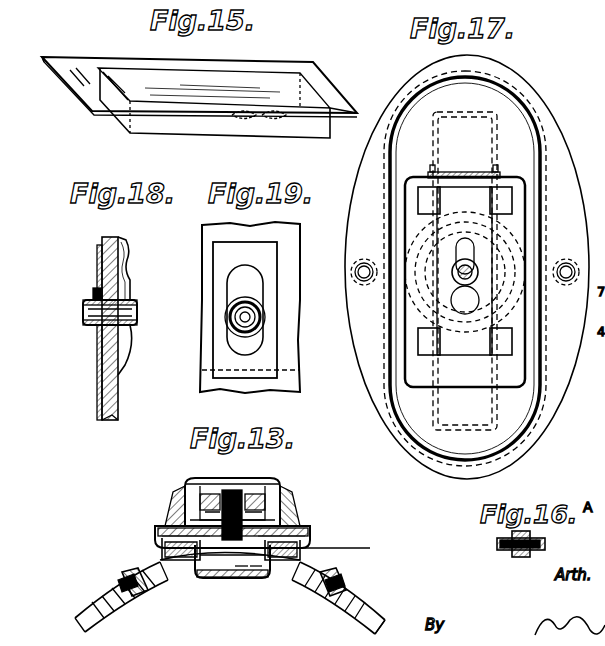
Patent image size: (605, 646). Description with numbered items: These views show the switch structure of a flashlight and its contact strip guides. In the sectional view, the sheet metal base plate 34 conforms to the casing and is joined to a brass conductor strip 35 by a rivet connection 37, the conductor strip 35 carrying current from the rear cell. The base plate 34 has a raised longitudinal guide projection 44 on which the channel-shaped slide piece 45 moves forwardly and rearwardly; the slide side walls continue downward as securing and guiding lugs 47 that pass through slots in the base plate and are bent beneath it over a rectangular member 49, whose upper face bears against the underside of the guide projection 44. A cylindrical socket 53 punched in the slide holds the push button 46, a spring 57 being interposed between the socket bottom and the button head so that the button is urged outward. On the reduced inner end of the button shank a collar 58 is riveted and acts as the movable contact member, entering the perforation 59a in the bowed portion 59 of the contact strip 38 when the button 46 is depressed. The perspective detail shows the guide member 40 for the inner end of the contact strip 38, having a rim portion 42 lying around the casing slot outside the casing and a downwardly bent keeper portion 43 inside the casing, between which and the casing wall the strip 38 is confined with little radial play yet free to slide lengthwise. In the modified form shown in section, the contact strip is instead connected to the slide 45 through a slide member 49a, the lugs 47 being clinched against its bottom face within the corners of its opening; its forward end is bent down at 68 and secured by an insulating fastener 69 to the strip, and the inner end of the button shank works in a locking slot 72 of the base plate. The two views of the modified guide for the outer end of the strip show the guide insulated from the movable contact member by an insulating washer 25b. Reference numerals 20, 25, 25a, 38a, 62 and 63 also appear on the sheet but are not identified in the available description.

In FIG. 19, the sheet metal plate 20 is at (203, 358).
In FIG. 13, the sheet metal plate 20 is at (370, 612).
In FIG. 18, the bushing 25 is at (128, 262).
In FIG. 18, the bushing collar 25a is at (138, 313).
In FIG. 18, the insulating washer 25b is at (96, 290).
In FIG. 19, the insulating washer 25b is at (258, 312).
In FIG. 13, the base plate 34 is at (348, 583).
In FIG. 13, the conductor strip 35 is at (128, 598).
In FIG. 13, the rivet connection 37 is at (125, 565).
In FIG. 18, the contact strip 38 is at (100, 376).
In FIG. 19, the contact strip 38 is at (268, 352).
In FIG. 17, the contact strip 38 is at (474, 267).
In FIG. 13, the contact strip 38 is at (196, 580).
In FIG. 19, the slot in plate 38a is at (250, 277).
In FIG. 15, the guide member 40 is at (199, 79).
In FIG. 17, the guide member 40 is at (465, 268).
In FIG. 13, the guide member 40 is at (320, 553).
In FIG. 15, the rim portion 42 is at (70, 62).
In FIG. 15, the keeper portion 43 is at (190, 133).
In FIG. 17, the keeper portion 43 is at (465, 271).
In FIG. 13, the keeper portion 43 is at (215, 582).
In FIG. 17, the guide projection 44 is at (465, 282).
In FIG. 13, the guide projection 44 is at (305, 538).
In FIG. 13, the slide piece 45 is at (210, 478).
In FIG. 13, the push button 46 is at (262, 480).
In FIG. 17, the securing and guiding lugs 47 is at (420, 200).
In FIG. 13, the rectangular member 49 is at (160, 540).
In FIG. 17, the slide member 49a is at (500, 206).
In FIG. 13, the cylindrical socket 53 is at (298, 508).
In FIG. 13, the spring 57 is at (296, 490).
In FIG. 13, the collar 58 is at (222, 516).
In FIG. 13, the bowed portion 59 is at (262, 578).
In FIG. 13, the perforation 59a is at (242, 578).
In FIG. 15, the opening 62 is at (246, 122).
In FIG. 15, the opening 63 is at (280, 122).
In FIG. 17, the downwardly bent portion 68 is at (470, 180).
In FIG. 16A, the insulating fastener 69 is at (498, 544).
In FIG. 17, the locking slot 72 is at (472, 298).